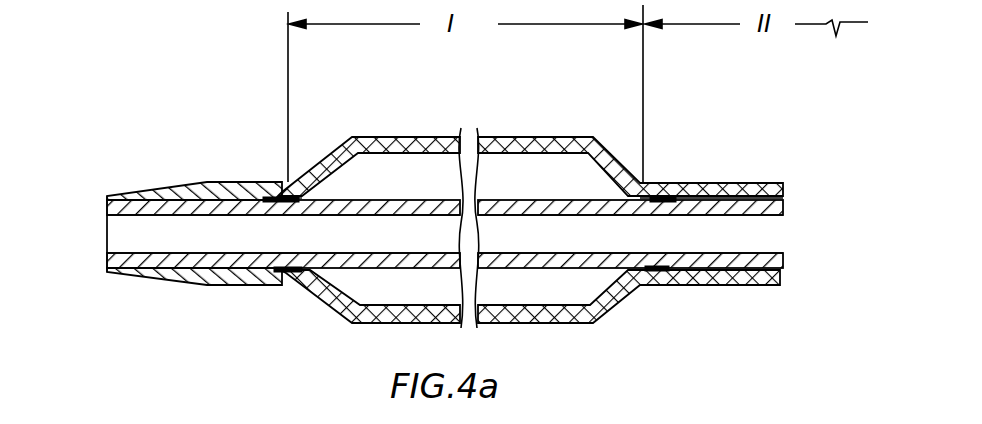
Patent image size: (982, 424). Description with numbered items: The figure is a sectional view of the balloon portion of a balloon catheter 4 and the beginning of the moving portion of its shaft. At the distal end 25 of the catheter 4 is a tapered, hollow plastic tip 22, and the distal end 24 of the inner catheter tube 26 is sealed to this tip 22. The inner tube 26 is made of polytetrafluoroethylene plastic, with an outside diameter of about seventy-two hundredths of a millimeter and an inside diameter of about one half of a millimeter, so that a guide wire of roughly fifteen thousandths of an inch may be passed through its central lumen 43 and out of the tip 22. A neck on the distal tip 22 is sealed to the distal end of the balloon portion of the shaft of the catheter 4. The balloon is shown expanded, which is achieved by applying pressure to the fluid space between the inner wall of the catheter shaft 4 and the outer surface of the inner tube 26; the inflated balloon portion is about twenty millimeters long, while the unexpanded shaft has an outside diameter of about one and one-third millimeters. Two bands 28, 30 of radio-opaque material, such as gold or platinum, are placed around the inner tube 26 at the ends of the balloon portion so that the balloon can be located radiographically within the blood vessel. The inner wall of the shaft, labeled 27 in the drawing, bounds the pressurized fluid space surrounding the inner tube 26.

The catheter 4 is at (604, 128).
The tapered hollow plastic tip 22 is at (188, 182).
The distal end of inner catheter tube 24 is at (106, 203).
The distal end of catheter 25 is at (270, 182).
The inner catheter tube 26 is at (785, 209).
The inner conduit 27 is at (785, 265).
The radio-opaque band 28 is at (294, 285).
The radio-opaque band 30 is at (660, 286).
The central lumen 43 is at (105, 236).